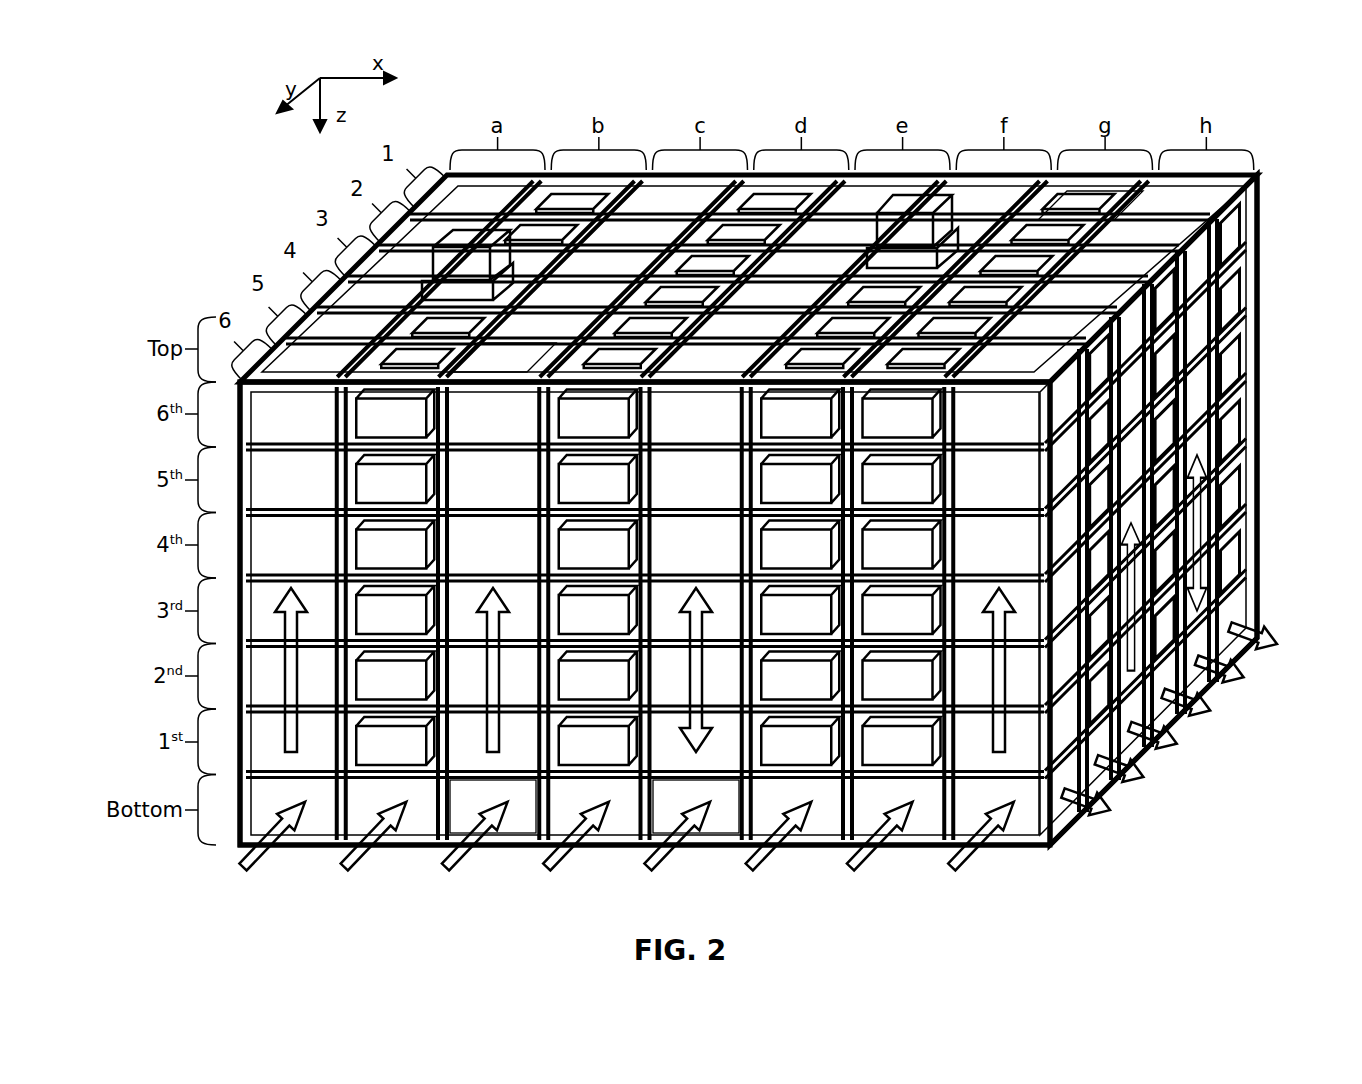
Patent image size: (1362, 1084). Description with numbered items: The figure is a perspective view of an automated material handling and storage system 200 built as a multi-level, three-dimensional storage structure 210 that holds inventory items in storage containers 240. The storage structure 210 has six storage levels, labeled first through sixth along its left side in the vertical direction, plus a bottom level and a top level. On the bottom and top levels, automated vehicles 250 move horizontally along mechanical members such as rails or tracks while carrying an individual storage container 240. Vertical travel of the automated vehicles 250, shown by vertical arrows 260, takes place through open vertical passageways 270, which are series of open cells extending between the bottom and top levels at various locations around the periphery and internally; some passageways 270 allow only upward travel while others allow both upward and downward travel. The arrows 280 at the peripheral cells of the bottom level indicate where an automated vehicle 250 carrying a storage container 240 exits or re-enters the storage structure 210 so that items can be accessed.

The material handling and storage system 200 is at (1150, 84).
The storage structure 210 is at (1262, 200).
The storage container 240 is at (926, 241).
The automated vehicle 250 is at (440, 292).
The vertical arrows 260 is at (284, 683).
The open vertical passageway 270 is at (578, 196).
The arrows 280 is at (262, 870).